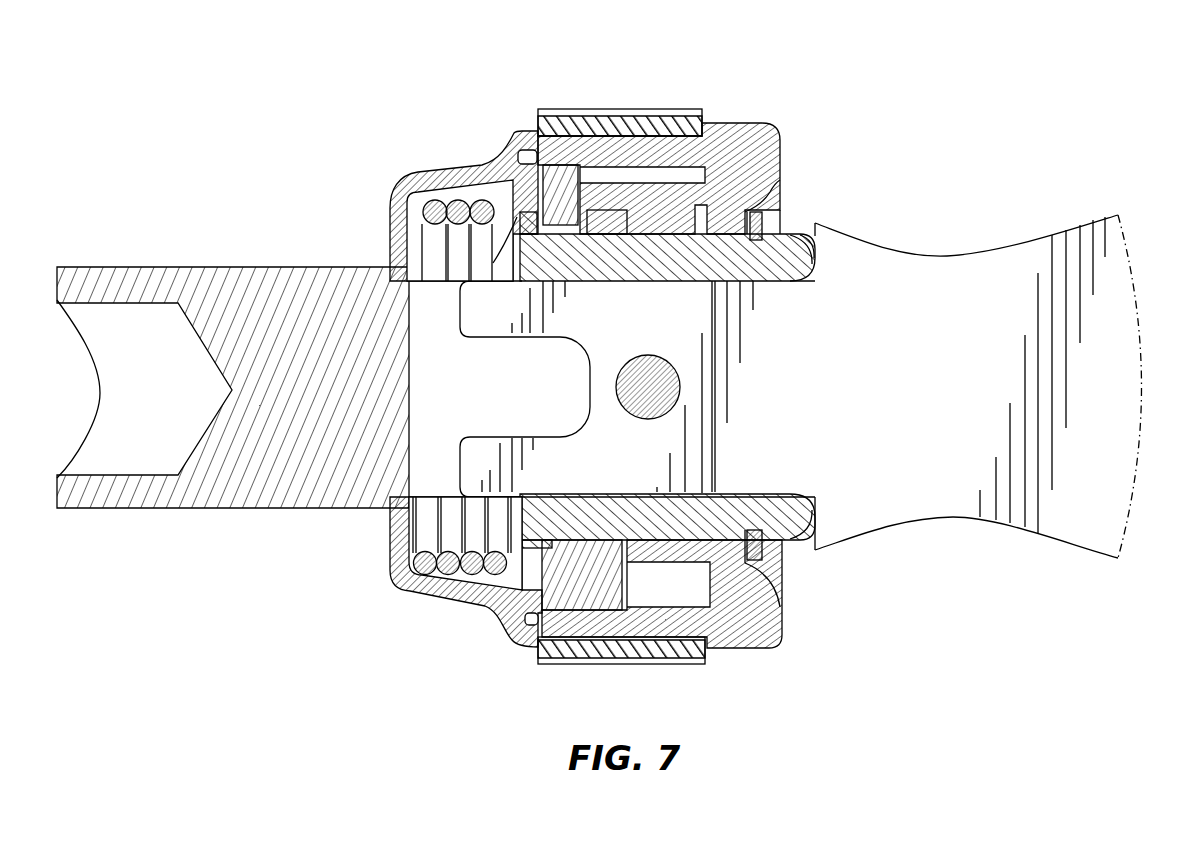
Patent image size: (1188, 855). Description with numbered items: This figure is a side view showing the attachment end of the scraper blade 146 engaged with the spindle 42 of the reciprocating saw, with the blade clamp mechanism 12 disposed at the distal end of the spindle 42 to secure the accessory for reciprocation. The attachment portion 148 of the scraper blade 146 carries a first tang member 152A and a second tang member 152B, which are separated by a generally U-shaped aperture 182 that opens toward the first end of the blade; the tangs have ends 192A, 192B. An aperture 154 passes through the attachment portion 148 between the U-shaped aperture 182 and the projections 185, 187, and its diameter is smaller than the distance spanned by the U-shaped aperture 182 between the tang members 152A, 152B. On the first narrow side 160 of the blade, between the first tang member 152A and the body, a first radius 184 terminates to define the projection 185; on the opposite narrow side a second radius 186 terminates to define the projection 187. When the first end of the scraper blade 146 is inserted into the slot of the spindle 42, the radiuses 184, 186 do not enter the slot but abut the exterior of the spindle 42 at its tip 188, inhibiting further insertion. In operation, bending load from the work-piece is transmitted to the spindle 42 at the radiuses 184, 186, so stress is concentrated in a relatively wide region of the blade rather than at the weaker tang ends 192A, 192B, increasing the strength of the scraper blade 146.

The spindle 42 is at (512, 70).
The blade clamp mechanism 12 is at (607, 109).
The attachment portion 148 is at (637, 265).
The first tang member 152A is at (456, 206).
The second tang member 152B is at (455, 440).
The end of first tang member 192A is at (447, 303).
The end of second tang member 192B is at (460, 467).
The first radius 184 is at (792, 236).
The projection 185 is at (815, 225).
The tip of the spindle 188 is at (817, 260).
The first narrow side 160 is at (968, 255).
The aperture 154 is at (680, 385).
The U-shaped aperture 182 is at (528, 437).
The second radius 186 is at (793, 543).
The projection 187 is at (813, 547).
The scraper blade 146 is at (977, 568).